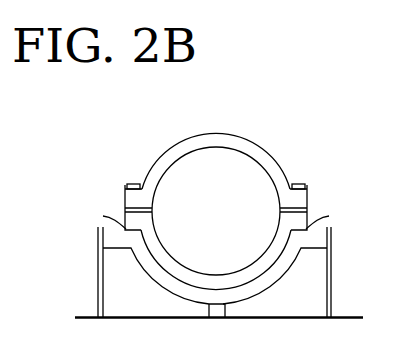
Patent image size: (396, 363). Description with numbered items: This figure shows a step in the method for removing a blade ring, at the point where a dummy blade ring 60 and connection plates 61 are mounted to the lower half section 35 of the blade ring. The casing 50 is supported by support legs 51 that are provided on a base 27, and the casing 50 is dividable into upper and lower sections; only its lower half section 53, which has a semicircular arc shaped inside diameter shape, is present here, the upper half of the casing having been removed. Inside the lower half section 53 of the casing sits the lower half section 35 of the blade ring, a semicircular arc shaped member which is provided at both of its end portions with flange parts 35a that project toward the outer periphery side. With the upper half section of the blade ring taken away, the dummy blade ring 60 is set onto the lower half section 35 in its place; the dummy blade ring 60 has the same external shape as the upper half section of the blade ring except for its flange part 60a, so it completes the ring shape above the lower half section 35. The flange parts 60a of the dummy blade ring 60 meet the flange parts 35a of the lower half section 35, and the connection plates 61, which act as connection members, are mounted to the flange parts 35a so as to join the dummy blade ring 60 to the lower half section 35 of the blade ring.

The dummy blade ring 60 is at (219, 137).
The flange part 60a is at (125, 196).
The connection plate 61 is at (127, 206).
The flange part 35a is at (125, 212).
The support leg 51 is at (98, 291).
The lower half section of the casing 53 is at (160, 295).
The lower half section of the blade ring 35 is at (233, 283).
The casing 50 is at (267, 283).
The base 27 is at (347, 317).